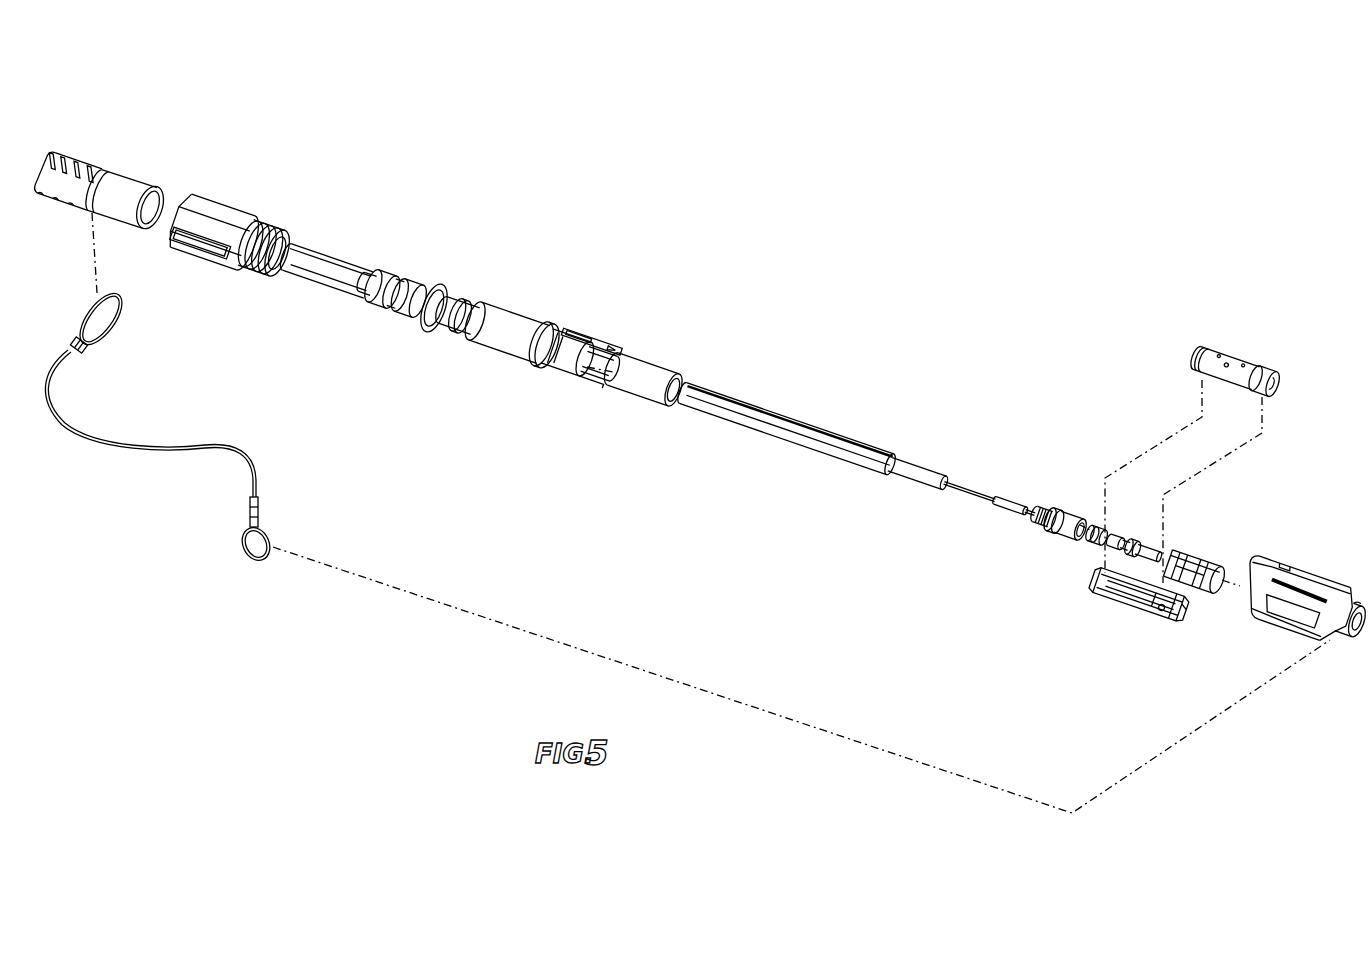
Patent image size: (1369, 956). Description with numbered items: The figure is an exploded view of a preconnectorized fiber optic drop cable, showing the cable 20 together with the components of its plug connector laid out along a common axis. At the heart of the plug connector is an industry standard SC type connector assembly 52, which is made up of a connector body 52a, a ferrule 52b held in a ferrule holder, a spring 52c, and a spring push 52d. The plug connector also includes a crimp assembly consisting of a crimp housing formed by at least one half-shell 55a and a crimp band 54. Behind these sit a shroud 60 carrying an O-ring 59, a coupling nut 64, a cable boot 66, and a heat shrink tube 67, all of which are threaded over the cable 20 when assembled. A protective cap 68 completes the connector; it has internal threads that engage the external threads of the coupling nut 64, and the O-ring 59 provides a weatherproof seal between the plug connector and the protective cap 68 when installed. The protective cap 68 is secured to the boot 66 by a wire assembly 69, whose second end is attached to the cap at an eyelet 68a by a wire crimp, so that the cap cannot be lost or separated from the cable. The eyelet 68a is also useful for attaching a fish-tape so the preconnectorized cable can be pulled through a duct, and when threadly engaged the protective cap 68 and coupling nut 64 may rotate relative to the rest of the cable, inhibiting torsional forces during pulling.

The cable 20 is at (316, 288).
The SC type connector assembly 52 is at (1227, 566).
The connector body 52a is at (1202, 593).
The ferrule 52b is at (1140, 560).
The spring 52c is at (1085, 545).
The spring push 52d is at (1052, 527).
The crimp band 54 is at (666, 357).
The half-shell 55a is at (1127, 607).
The O-ring 59 is at (442, 280).
The shroud 60 is at (525, 313).
The coupling nut 64 is at (222, 197).
The cable boot 66 is at (100, 170).
The heat shrink tube 67 is at (402, 267).
The protective cap 68 is at (1317, 585).
The eyelet 68a is at (1355, 612).
The wire assembly 69 is at (254, 472).